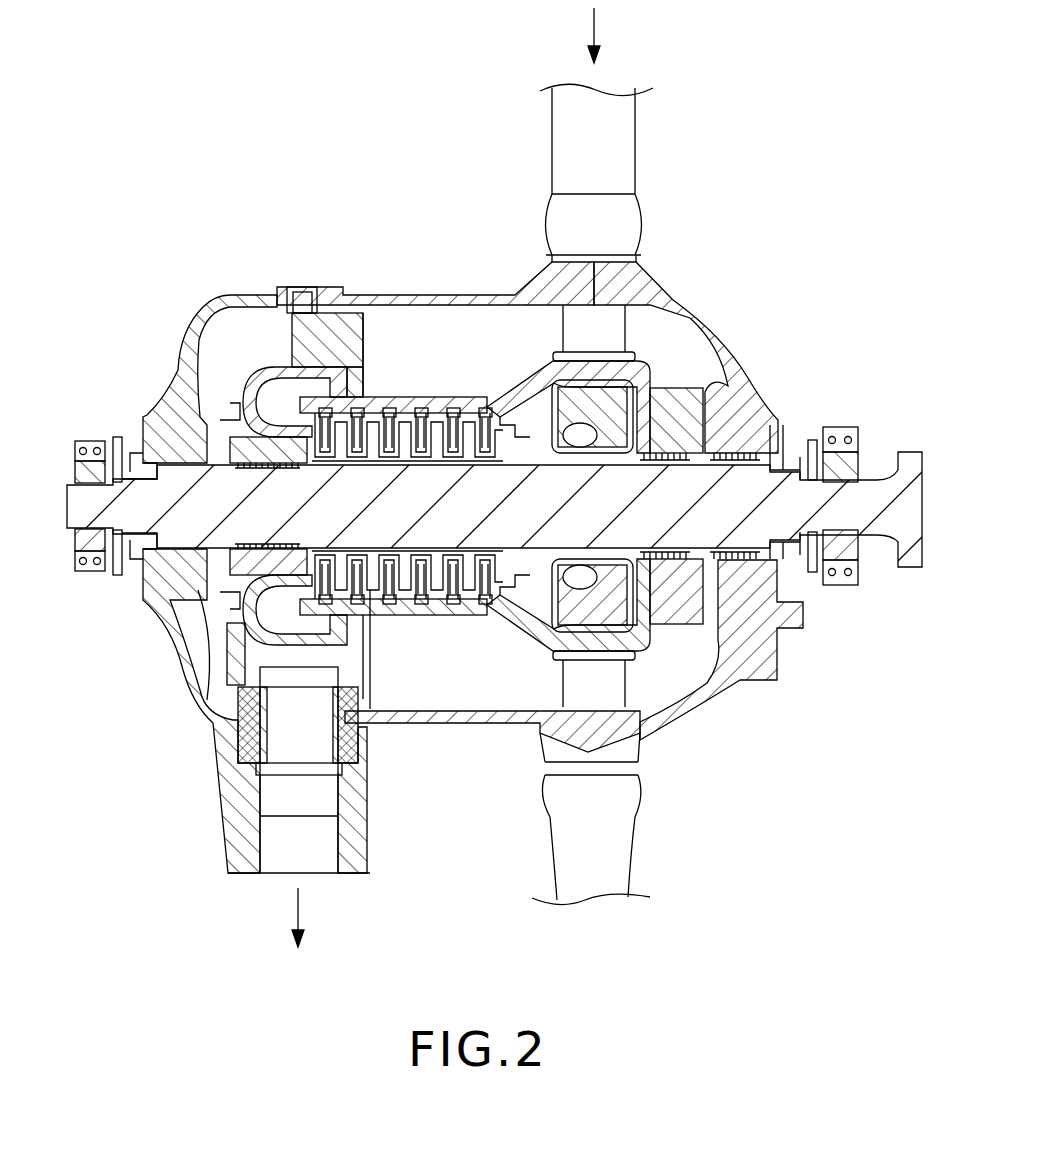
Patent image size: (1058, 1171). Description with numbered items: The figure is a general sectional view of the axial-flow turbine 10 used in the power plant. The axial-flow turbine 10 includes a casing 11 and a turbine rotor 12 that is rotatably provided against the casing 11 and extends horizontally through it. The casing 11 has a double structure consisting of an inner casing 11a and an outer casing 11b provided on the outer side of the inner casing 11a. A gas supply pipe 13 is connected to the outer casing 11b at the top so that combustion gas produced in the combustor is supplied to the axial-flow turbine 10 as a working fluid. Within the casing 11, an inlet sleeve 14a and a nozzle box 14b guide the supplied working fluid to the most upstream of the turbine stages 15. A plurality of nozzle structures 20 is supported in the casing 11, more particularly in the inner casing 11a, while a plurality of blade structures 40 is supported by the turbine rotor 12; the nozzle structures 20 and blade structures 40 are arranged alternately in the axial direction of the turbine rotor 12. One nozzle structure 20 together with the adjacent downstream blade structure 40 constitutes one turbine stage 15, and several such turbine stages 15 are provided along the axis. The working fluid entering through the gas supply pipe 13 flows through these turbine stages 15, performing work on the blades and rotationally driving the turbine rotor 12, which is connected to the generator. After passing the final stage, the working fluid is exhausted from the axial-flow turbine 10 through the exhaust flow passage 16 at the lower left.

The axial-flow turbine 10 is at (841, 126).
The casing 11 is at (745, 332).
The inner casing 11a is at (740, 378).
The outer casing 11b is at (660, 292).
The turbine rotor 12 is at (877, 497).
The gas supply pipe 13 is at (625, 145).
The inlet sleeve 14a is at (572, 328).
The nozzle box 14b is at (602, 404).
The turbine stage 15 is at (472, 241).
The exhaust flow passage 16 is at (357, 826).
The nozzle structure 20 is at (422, 417).
The blade structure 40 is at (398, 413).